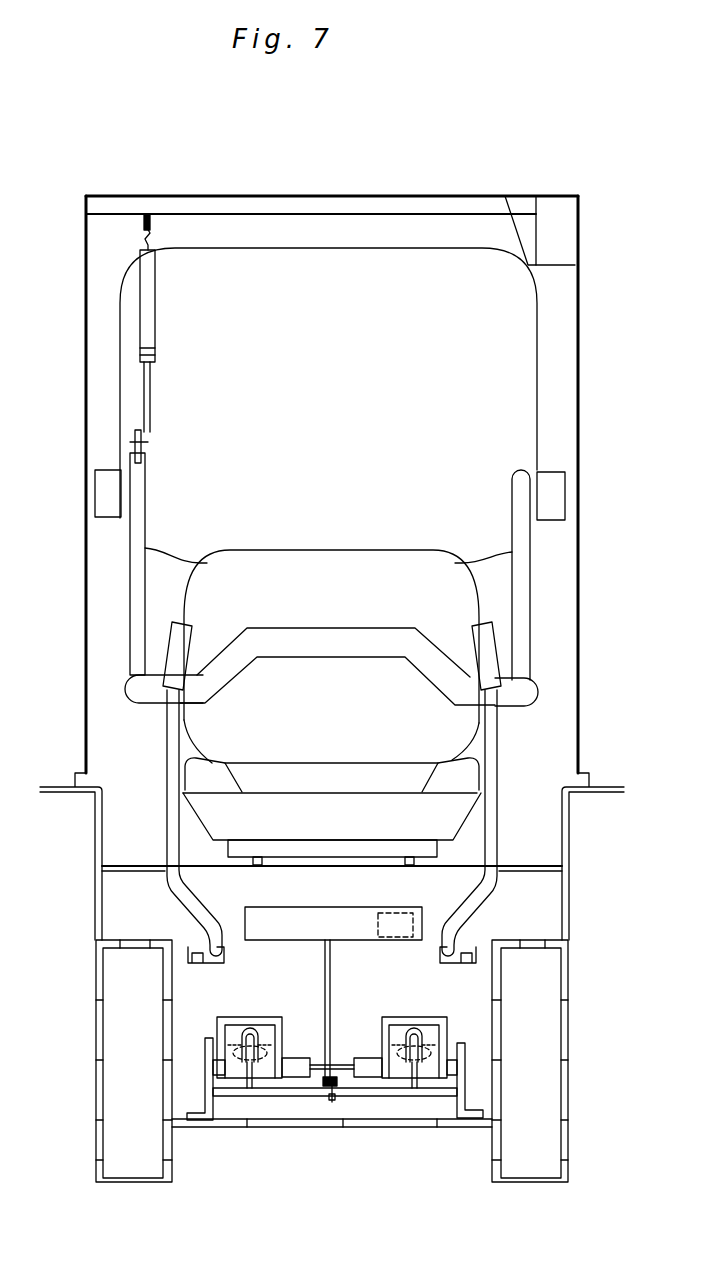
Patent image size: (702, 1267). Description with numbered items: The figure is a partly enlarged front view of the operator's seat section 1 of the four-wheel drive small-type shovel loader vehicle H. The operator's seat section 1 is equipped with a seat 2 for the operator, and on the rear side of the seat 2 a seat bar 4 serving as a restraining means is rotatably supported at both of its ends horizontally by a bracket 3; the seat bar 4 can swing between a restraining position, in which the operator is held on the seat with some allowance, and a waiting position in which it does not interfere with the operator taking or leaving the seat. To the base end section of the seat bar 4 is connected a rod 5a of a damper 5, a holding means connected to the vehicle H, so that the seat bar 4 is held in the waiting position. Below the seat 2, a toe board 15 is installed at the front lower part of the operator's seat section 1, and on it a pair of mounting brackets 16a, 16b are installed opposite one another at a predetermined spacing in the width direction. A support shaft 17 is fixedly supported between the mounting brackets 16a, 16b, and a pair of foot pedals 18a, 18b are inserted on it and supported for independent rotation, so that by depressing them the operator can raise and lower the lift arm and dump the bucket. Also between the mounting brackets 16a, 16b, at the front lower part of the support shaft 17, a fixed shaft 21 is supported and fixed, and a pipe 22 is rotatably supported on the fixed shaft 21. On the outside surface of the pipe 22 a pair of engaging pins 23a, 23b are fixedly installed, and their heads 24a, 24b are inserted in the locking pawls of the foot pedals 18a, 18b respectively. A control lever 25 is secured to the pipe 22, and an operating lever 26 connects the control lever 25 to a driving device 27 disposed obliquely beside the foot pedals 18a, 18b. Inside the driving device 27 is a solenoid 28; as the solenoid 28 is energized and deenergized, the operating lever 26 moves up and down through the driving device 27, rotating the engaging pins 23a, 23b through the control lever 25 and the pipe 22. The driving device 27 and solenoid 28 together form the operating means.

The four-wheel drive small-type shovel loader vehicle H is at (390, 196).
The operator's seat section 1 is at (516, 362).
The seat 2 is at (305, 554).
The bracket 3 is at (106, 470).
The seat bar 4 is at (347, 628).
The damper 5 is at (155, 305).
The rod 5a is at (150, 383).
The toe board 15 is at (335, 1097).
The mounting bracket 16a is at (210, 1040).
The mounting bracket 16b is at (462, 1043).
The support shaft 17 is at (350, 1063).
The foot pedal 18a is at (248, 1017).
The foot pedal 18b is at (390, 1020).
The fixed shaft 21 is at (463, 1117).
The pipe 22 is at (272, 1087).
The engaging pin 23a is at (248, 1080).
The engaging pin 23b is at (417, 1082).
The head 24a is at (267, 1050).
The head 24b is at (417, 1037).
The control lever 25 is at (332, 1100).
The operating lever 26 is at (330, 993).
The driving device 27 is at (308, 907).
The solenoid 28 is at (423, 930).